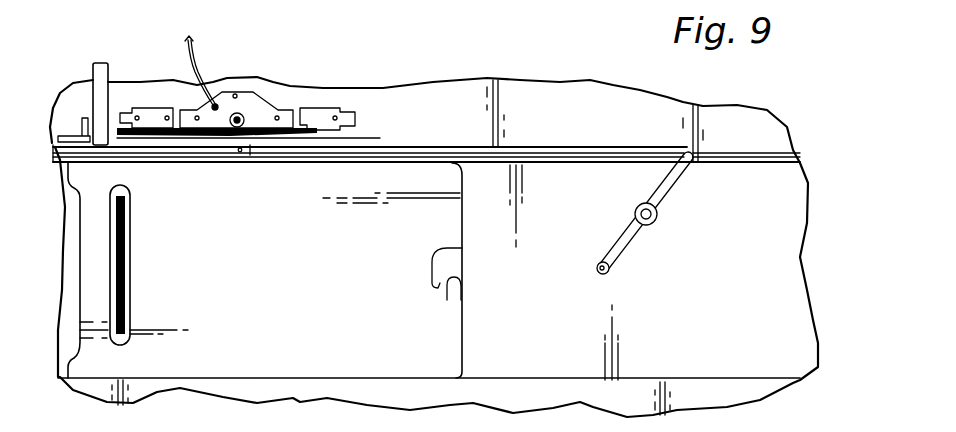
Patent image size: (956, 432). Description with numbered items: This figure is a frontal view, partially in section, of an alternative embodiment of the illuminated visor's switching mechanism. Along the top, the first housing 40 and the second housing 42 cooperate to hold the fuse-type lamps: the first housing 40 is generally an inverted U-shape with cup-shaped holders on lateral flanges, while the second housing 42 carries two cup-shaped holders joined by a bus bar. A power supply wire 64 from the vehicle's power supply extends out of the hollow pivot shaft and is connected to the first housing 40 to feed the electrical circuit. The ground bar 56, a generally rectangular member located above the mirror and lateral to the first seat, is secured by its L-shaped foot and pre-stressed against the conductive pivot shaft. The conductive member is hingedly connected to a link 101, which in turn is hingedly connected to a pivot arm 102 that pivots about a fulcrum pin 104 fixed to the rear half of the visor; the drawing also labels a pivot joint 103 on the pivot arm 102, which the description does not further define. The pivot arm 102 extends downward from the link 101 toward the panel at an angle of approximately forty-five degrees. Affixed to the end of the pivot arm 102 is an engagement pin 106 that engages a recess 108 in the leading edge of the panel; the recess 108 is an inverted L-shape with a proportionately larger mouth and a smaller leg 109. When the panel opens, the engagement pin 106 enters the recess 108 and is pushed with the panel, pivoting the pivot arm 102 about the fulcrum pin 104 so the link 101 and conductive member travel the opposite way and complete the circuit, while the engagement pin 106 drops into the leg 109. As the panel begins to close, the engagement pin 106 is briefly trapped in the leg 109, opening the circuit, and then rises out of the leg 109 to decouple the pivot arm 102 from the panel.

The ground bar 56 is at (110, 79).
The power supply wire 64 is at (196, 71).
The first housing 40 is at (262, 100).
The second housing 42 is at (316, 109).
The link 101 is at (540, 147).
The fulcrum pin 104 is at (690, 150).
The pivot arm 102 is at (676, 188).
The pivot 103 is at (656, 224).
The engagement pin 106 is at (611, 272).
The recess 108 is at (450, 267).
The leg 109 is at (452, 290).